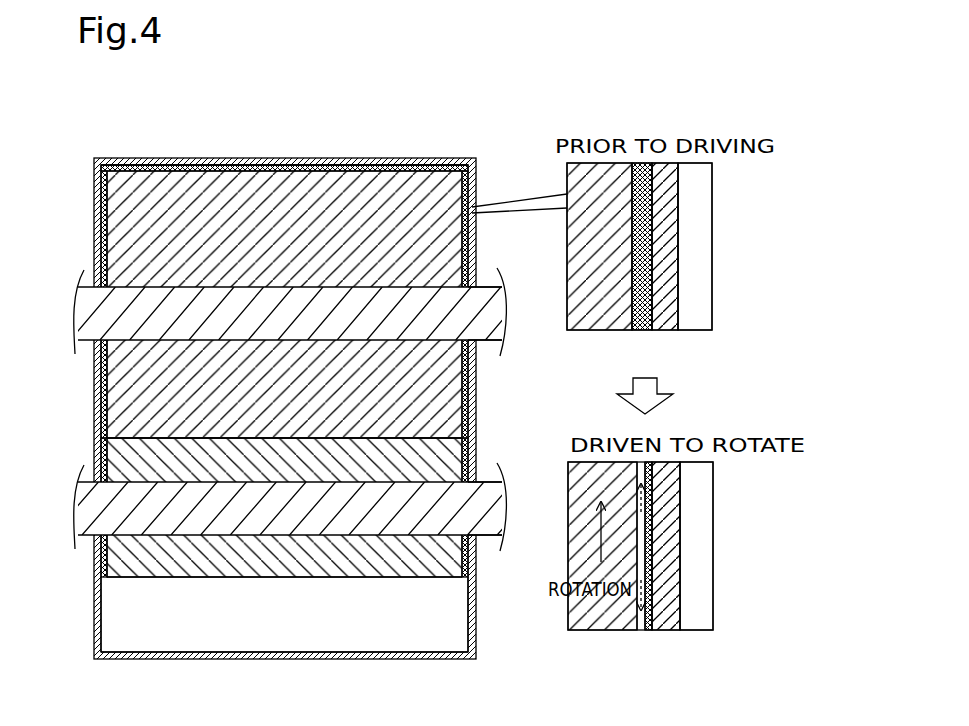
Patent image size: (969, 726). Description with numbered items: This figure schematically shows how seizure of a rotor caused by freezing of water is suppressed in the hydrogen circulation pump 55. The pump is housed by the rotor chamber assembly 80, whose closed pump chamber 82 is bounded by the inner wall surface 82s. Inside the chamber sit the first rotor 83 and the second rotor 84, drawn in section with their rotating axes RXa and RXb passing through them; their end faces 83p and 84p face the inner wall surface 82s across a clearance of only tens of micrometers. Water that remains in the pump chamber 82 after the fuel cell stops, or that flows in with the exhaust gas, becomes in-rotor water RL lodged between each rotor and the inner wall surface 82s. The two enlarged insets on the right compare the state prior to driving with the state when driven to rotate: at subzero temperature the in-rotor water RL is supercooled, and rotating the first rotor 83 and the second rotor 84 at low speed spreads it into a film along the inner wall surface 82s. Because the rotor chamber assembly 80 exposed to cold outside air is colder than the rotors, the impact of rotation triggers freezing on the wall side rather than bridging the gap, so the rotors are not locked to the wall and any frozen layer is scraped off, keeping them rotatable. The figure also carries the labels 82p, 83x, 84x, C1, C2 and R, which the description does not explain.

The hydrogen circulation pump 55 is at (98, 136).
The rotor chamber assembly 80 is at (348, 160).
The pump chamber 82 is at (158, 627).
The inner wall surface 82s is at (105, 632).
The housing layer 82p is at (656, 331).
The first rotor 83 is at (116, 401).
The end face 83p is at (100, 193).
The through hole of first elastic member 83x is at (487, 345).
The second rotor 84 is at (296, 570).
The end face 84p is at (97, 556).
The through hole of second elastic member 84x is at (493, 476).
The first chamber C1 is at (100, 226).
The second chamber C2 is at (99, 621).
The rotating axis RXa is at (518, 313).
The rotating axis RXb is at (518, 508).
The in-rotor water RL is at (650, 320).
The rotation direction R is at (589, 532).